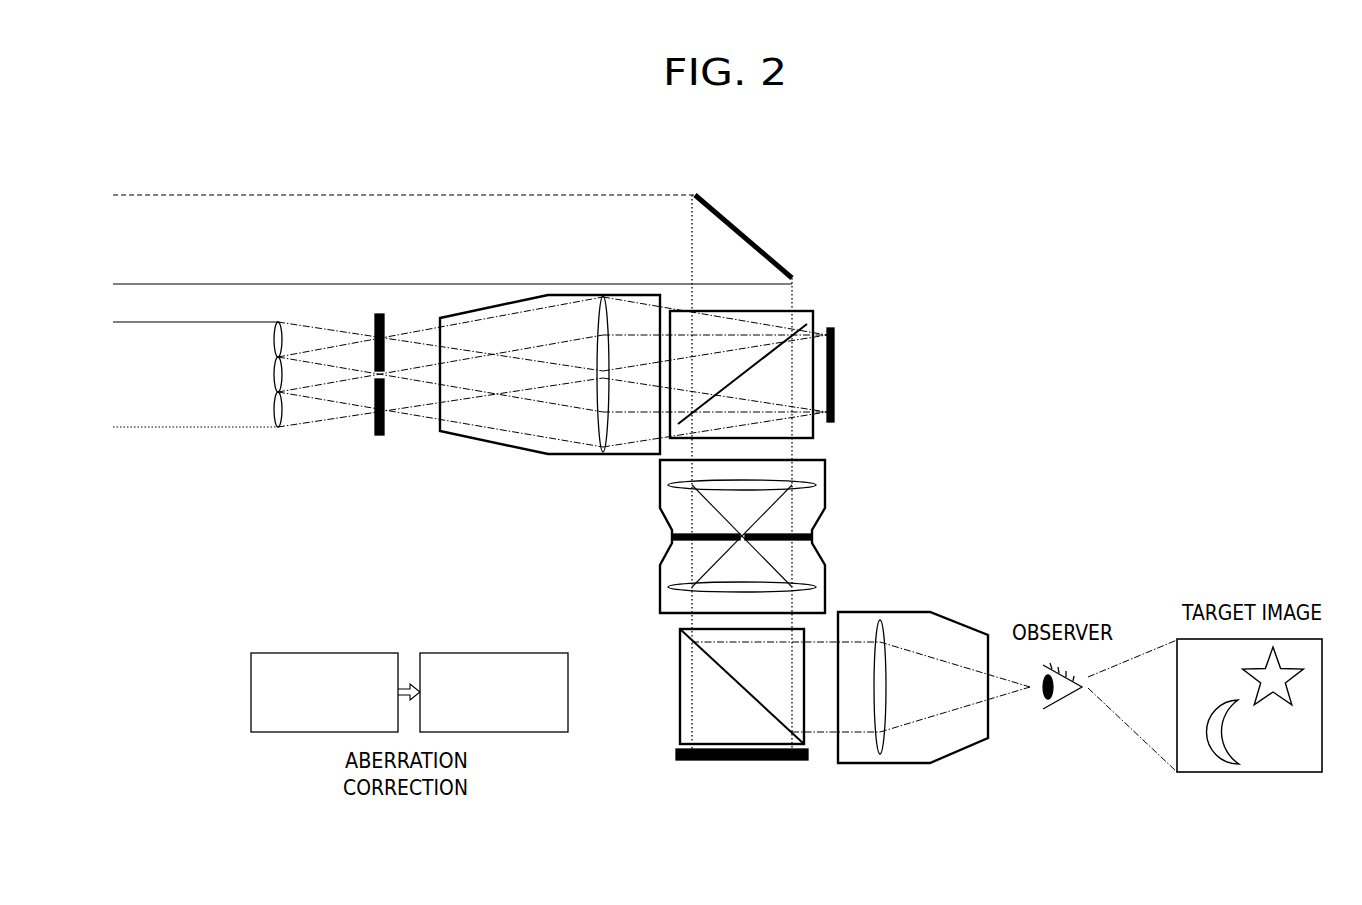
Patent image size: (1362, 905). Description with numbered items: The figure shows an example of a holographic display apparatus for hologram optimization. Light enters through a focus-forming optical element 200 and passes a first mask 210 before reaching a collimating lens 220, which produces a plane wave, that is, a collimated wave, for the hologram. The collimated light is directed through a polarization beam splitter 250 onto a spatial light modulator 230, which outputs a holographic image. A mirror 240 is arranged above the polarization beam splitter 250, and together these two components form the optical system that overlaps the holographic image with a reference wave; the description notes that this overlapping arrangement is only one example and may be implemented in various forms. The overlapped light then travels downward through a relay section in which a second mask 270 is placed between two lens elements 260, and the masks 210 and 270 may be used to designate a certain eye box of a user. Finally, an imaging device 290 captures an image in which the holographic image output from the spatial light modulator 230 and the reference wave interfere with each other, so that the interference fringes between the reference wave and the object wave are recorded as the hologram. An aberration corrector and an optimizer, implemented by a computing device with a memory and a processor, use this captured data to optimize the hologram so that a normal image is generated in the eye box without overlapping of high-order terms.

The focus-forming optical element 200 is at (278, 428).
The mask 210 is at (379, 435).
The collimating lens 220 is at (603, 452).
The spatial light modulator 230 is at (834, 377).
The mirror 240 is at (745, 236).
The polarization beam splitter 250 is at (805, 327).
The relay lens 260 is at (825, 483).
The mask 270 is at (812, 537).
The imaging device 290 is at (742, 762).